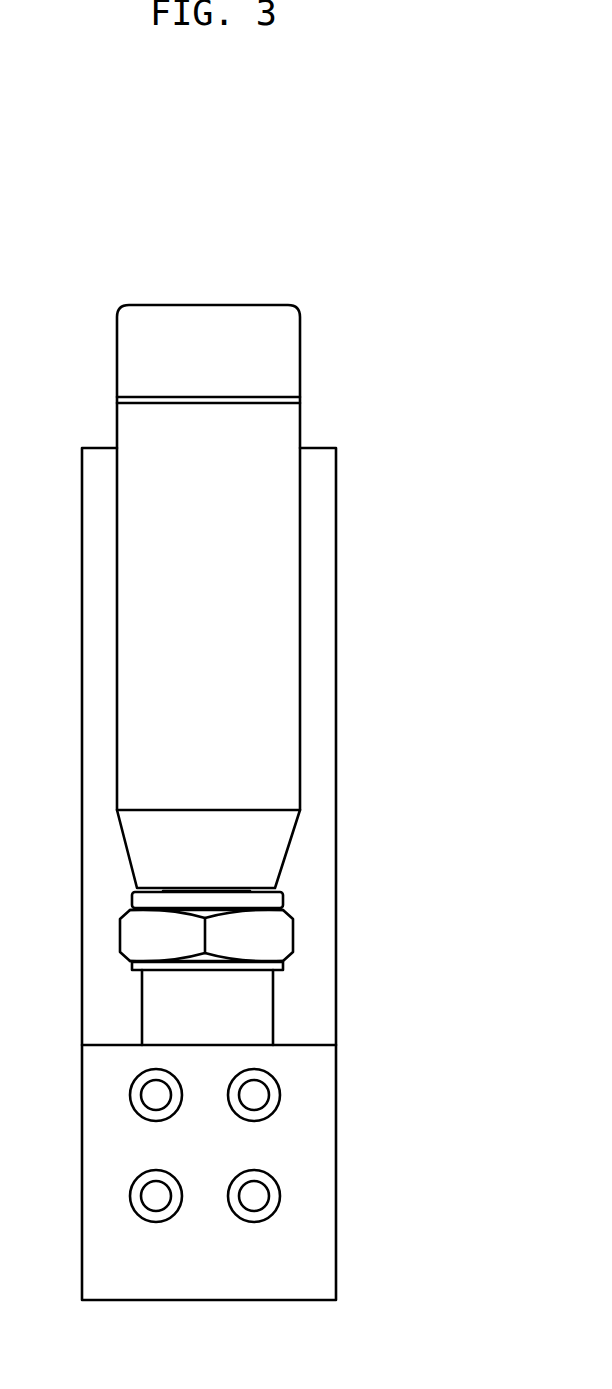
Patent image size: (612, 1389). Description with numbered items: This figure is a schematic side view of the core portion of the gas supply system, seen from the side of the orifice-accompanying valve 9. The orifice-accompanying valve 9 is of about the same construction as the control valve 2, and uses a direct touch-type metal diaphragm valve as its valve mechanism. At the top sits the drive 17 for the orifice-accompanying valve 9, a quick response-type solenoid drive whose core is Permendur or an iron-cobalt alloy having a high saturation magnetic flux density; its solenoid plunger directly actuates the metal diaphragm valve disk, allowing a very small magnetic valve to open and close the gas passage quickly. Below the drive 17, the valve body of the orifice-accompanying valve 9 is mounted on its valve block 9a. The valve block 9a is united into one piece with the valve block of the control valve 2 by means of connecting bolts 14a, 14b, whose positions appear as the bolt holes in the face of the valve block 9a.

The control valve 2 is at (337, 773).
The drive 17 is at (300, 538).
The orifice-accompanying valve 9 is at (277, 993).
The valve block 9a is at (298, 1151).
The connecting bolt 14a is at (254, 1093).
The connecting bolt 14b is at (254, 1196).